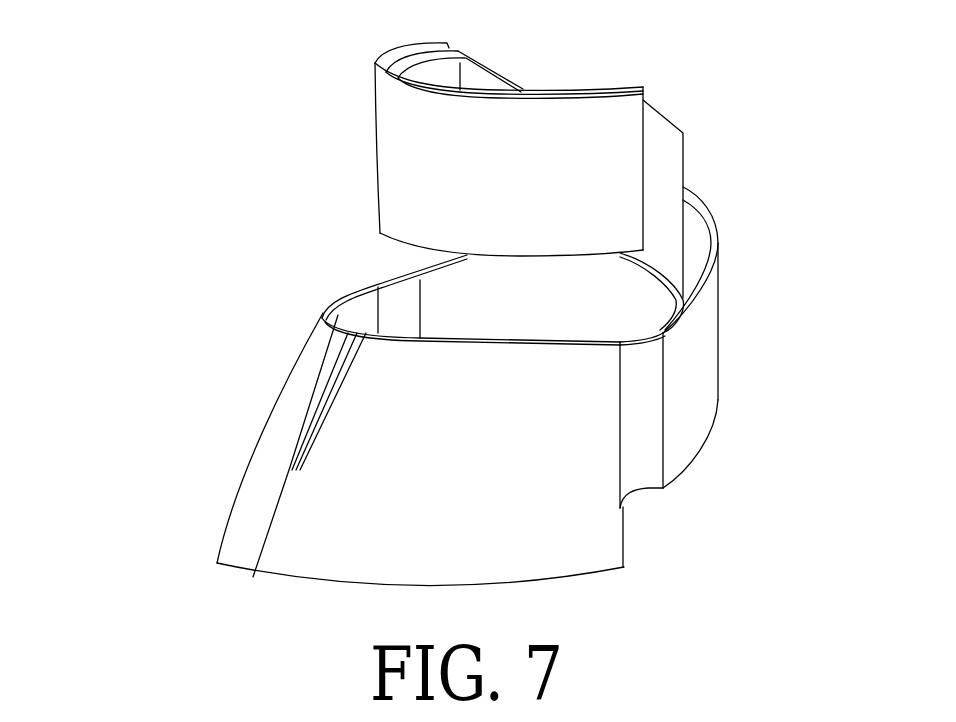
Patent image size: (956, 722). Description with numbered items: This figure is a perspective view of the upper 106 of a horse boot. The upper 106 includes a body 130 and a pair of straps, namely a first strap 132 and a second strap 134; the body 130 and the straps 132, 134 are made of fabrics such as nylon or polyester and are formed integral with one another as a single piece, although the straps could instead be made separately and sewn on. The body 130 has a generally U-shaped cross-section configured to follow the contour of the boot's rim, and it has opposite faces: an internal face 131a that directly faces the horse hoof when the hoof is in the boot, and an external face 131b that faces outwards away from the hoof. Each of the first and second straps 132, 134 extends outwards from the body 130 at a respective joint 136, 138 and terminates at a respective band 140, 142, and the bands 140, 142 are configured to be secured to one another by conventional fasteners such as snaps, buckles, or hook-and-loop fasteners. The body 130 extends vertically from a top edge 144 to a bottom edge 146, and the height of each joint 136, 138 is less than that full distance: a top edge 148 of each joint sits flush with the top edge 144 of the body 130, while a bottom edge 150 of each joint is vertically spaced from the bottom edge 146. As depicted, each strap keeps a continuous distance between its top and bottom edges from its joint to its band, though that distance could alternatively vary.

The upper 106 is at (143, 166).
The body 130 is at (243, 409).
The internal face 131a is at (367, 308).
The external face 131b is at (230, 548).
The first strap 132 is at (710, 352).
The second strap 134 is at (675, 152).
The joint 136 is at (657, 443).
The joint 138 is at (397, 298).
The band 140 is at (450, 67).
The band 142 is at (387, 127).
The top edge 144 is at (460, 342).
The bottom edge 146 is at (605, 572).
The top edge 148 is at (633, 335).
The bottom edge 150 is at (643, 488).